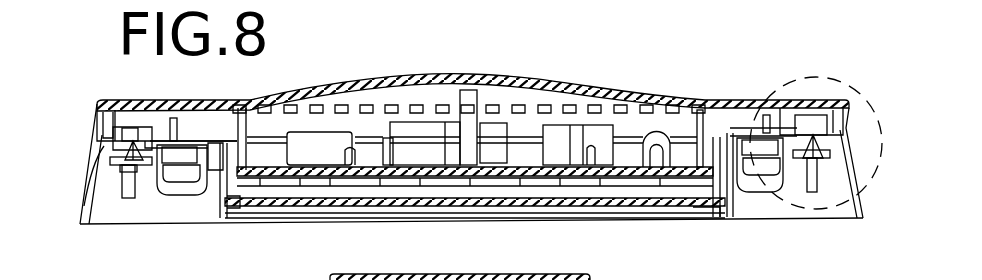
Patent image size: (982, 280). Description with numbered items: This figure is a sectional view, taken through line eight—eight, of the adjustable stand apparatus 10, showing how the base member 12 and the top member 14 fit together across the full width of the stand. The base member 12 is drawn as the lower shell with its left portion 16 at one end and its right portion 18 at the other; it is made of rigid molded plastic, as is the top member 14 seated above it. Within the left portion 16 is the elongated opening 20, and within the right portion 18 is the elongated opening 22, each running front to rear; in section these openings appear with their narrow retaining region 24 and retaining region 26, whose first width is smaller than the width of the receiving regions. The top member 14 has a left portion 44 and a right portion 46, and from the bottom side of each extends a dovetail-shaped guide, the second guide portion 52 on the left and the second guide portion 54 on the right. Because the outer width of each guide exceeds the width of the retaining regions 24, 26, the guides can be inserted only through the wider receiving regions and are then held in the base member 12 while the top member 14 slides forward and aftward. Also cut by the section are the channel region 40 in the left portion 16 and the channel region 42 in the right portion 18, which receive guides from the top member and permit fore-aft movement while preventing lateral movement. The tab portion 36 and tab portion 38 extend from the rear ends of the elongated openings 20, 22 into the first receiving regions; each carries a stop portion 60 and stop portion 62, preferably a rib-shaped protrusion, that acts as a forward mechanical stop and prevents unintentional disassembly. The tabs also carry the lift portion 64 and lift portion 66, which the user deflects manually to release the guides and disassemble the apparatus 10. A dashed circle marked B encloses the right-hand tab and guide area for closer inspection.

The adjustable stand apparatus 10 is at (900, 192).
The base member 12 is at (648, 222).
The top member 14 is at (242, 108).
The left portion 16 is at (83, 190).
The right portion 18 is at (830, 220).
The elongated opening 20 is at (108, 121).
The retaining region 24 is at (141, 141).
The elongated opening 22 is at (840, 150).
The retaining region 26 is at (815, 180).
The tab portion 36 is at (122, 170).
The tab portion 38 is at (812, 168).
The channel region 40 is at (178, 175).
The channel region 42 is at (760, 162).
The left portion 44 is at (100, 139).
The right portion 46 is at (833, 132).
The second guide portion 52 is at (102, 150).
The second guide portion 54 is at (818, 138).
The stop portion 60 is at (120, 166).
The stop portion 62 is at (800, 158).
The lift portion 64 is at (130, 200).
The lift portion 66 is at (818, 178).
The detail B is at (798, 70).